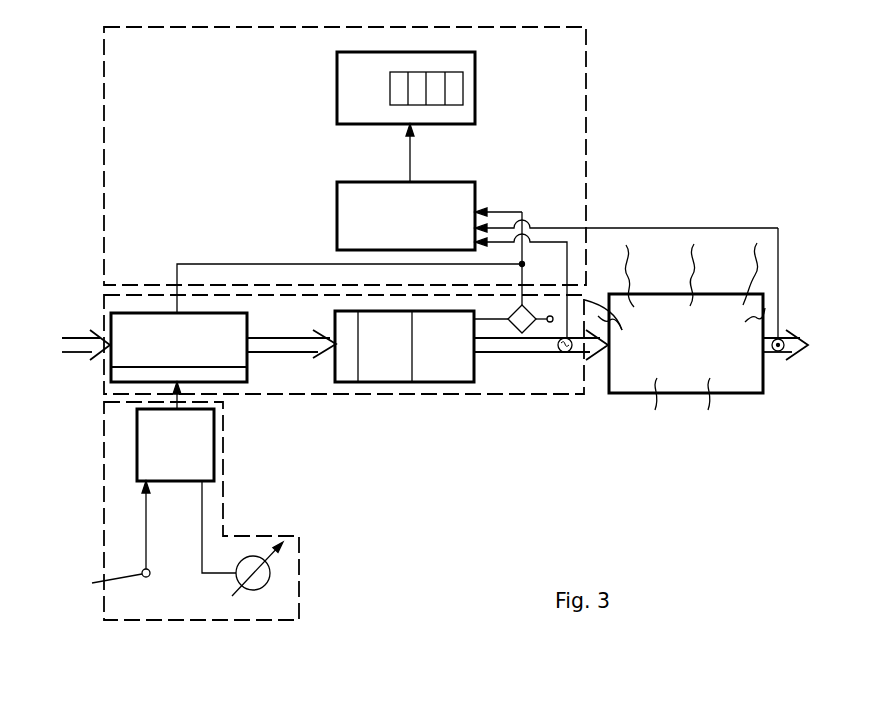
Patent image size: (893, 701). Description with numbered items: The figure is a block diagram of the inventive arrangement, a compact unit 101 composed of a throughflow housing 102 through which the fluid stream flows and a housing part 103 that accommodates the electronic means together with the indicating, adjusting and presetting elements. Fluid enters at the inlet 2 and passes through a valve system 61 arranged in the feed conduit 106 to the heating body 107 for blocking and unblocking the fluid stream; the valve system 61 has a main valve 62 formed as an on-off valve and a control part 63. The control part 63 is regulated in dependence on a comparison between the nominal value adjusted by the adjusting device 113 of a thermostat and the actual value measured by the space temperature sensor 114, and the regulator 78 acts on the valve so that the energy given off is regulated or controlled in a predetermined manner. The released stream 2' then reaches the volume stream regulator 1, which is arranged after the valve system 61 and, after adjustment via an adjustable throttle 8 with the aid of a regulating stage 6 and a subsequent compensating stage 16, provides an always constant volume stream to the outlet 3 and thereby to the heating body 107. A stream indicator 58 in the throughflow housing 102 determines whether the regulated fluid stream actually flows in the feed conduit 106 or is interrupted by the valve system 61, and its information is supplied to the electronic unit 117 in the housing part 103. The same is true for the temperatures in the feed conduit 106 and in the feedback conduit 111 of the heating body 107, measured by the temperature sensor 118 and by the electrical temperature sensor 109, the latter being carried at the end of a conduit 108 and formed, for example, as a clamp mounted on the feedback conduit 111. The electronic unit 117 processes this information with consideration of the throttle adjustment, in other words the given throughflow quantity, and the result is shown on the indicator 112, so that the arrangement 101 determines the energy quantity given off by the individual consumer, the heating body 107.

The volume stream regulator 1 is at (405, 386).
The fuel inlet 2 is at (86, 373).
The fuel flow to injection device 2' is at (291, 336).
The outlet 3 is at (495, 346).
The regulating stage 6 is at (387, 367).
The adjustable throttle 8 is at (352, 368).
The compensating stage 16 is at (450, 368).
The stream indicator 58 is at (521, 318).
The valve system 61 is at (261, 380).
The main valve 62 is at (163, 338).
The control part 63 is at (218, 370).
The regulator 78 is at (195, 464).
The compact unit 101 is at (384, 501).
The throughflow housing 102 is at (524, 398).
The housing part 103 is at (588, 63).
The feed conduit 106 is at (79, 333).
The heating body 107 is at (698, 327).
The conduit 108 is at (669, 225).
The electrical temperature sensor 109 is at (772, 356).
The feedback conduit 111 is at (759, 358).
The indicator 112 is at (468, 62).
The adjusting device 113 is at (265, 570).
The space temperature sensor 114 is at (107, 583).
The electronic unit 117 is at (423, 186).
The temperature sensor 118 is at (566, 353).